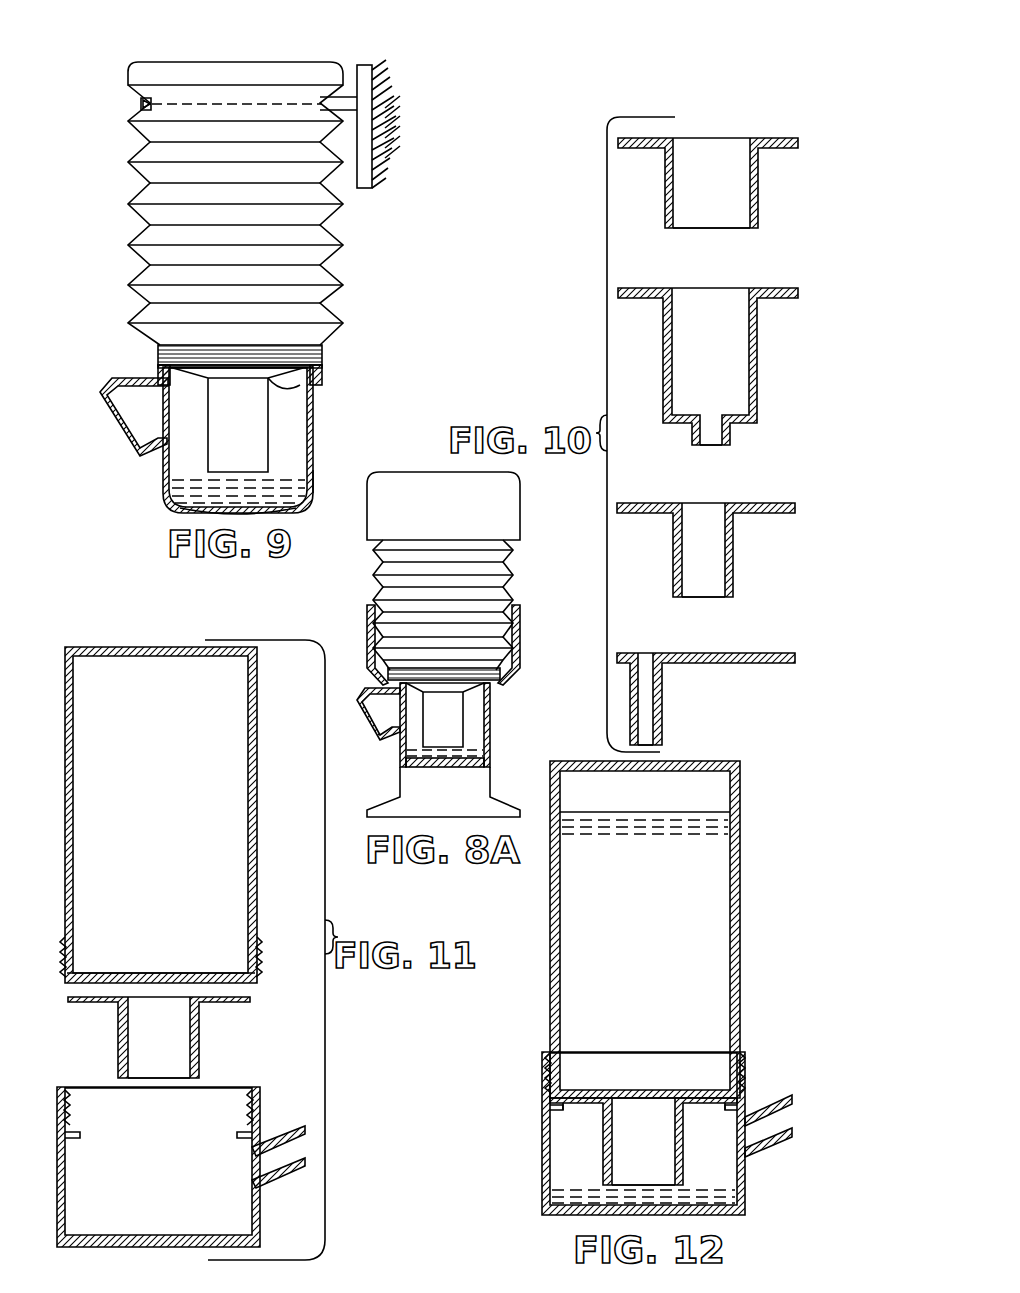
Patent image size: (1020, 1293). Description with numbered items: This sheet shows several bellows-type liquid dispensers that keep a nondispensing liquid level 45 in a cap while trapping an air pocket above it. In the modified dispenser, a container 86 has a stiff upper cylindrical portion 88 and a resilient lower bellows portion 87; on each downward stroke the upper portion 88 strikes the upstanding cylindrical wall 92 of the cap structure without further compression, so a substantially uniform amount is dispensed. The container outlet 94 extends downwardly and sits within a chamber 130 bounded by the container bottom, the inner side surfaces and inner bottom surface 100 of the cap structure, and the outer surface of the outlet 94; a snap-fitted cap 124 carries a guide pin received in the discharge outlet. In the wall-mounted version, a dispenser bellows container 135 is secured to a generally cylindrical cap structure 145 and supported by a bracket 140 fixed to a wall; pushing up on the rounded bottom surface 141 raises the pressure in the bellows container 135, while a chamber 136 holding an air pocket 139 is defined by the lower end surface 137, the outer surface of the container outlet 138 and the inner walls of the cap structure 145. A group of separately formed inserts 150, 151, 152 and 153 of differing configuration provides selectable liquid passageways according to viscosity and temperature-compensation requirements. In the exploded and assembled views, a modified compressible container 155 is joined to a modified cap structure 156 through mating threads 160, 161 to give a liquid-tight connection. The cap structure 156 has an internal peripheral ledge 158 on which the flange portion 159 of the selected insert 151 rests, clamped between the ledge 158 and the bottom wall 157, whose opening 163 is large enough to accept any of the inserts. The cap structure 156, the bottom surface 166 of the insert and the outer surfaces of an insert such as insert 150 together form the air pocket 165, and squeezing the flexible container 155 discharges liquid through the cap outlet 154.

In FIG. 9, the dispenser bellows container 135 is at (122, 192).
In FIG. 9, the bracket 140 is at (349, 96).
In FIG. 9, the chamber 136 is at (300, 428).
In FIG. 9, the lower end surface 137 is at (300, 385).
In FIG. 9, the container outlet 138 is at (262, 405).
In FIG. 9, the air pocket 139 is at (198, 419).
In FIG. 9, the level 45 is at (190, 475).
In FIG. 8A, the level 45 is at (390, 738).
In FIG. 9, the snap-fitted cap 124 is at (135, 450).
In FIG. 9, the rounded bottom surface 141 is at (160, 506).
In FIG. 9, the cap structure 145 is at (320, 468).
In FIG. 8A, the upper cylindrical portion 88 is at (513, 490).
In FIG. 8A, the container 86 is at (476, 597).
In FIG. 8A, the lower bellows portion 87 is at (505, 598).
In FIG. 8A, the upstanding cylindrical wall 92 is at (368, 622).
In FIG. 8A, the container outlet 94 is at (455, 712).
In FIG. 8A, the chamber 130 is at (485, 735).
In FIG. 8A, the inner bottom surface 100 is at (470, 757).
In FIG. 10, the insert 150 is at (717, 136).
In FIG. 11, the insert 150 is at (145, 1029).
In FIG. 12, the insert 150 is at (645, 1141).
In FIG. 10, the insert 151 is at (700, 286).
In FIG. 10, the insert 152 is at (698, 501).
In FIG. 10, the insert 153 is at (650, 651).
In FIG. 11, the compressible container 155 is at (137, 815).
In FIG. 12, the compressible container 155 is at (668, 929).
In FIG. 11, the threads 160 is at (62, 940).
In FIG. 11, the opening 163 is at (182, 972).
In FIG. 12, the opening 163 is at (570, 1095).
In FIG. 11, the flange portion 159 is at (75, 997).
In FIG. 11, the bottom surface 166 is at (88, 1003).
In FIG. 12, the bottom surface 166 is at (645, 1122).
In FIG. 11, the cap structure 156 is at (184, 1167).
In FIG. 12, the cap structure 156 is at (638, 1133).
In FIG. 11, the threads 161 is at (250, 1116).
In FIG. 11, the internal peripheral ledge 158 is at (80, 1135).
In FIG. 12, the internal peripheral ledge 158 is at (560, 1120).
In FIG. 11, the cap outlet 154 is at (278, 1143).
In FIG. 12, the cap outlet 154 is at (762, 1105).
In FIG. 12, the bottom wall 157 is at (705, 1095).
In FIG. 12, the air pocket 165 is at (577, 1160).